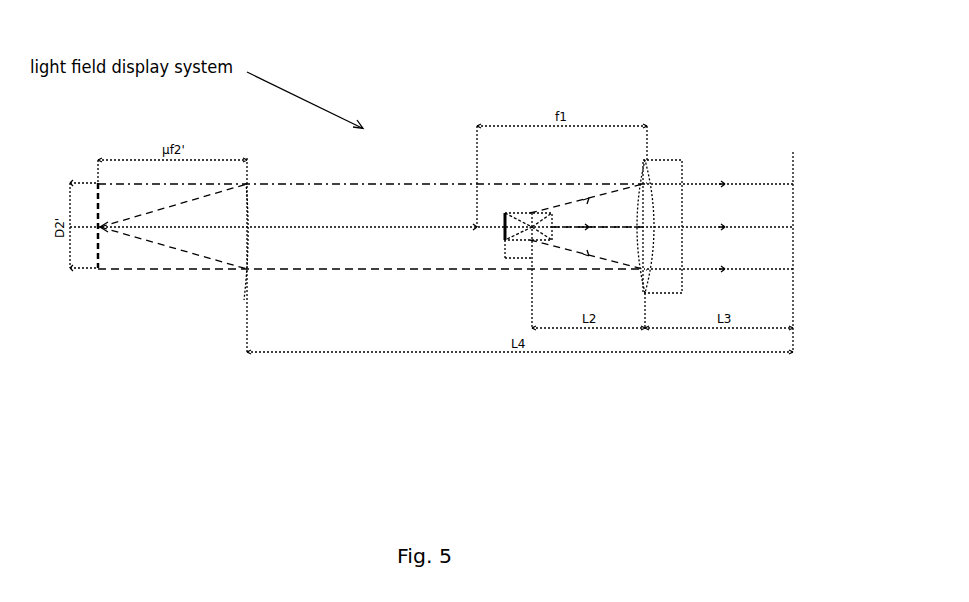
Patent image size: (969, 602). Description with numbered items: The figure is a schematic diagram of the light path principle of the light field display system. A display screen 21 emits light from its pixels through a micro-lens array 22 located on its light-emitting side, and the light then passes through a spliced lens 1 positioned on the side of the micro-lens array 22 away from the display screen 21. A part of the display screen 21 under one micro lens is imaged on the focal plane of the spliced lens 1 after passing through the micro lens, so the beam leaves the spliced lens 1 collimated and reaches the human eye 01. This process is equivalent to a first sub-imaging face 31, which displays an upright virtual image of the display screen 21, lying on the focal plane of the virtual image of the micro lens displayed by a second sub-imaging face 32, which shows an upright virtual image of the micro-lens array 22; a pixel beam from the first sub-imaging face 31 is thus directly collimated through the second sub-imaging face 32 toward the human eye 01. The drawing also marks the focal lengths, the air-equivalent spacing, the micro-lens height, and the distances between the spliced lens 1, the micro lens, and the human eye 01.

The spliced lens 1 is at (660, 152).
The display screen 21 is at (499, 205).
The micro-lens array 22 is at (528, 205).
The human eye 01 is at (798, 147).
The first sub-imaging face 31 is at (95, 274).
The second sub-imaging face 32 is at (234, 275).